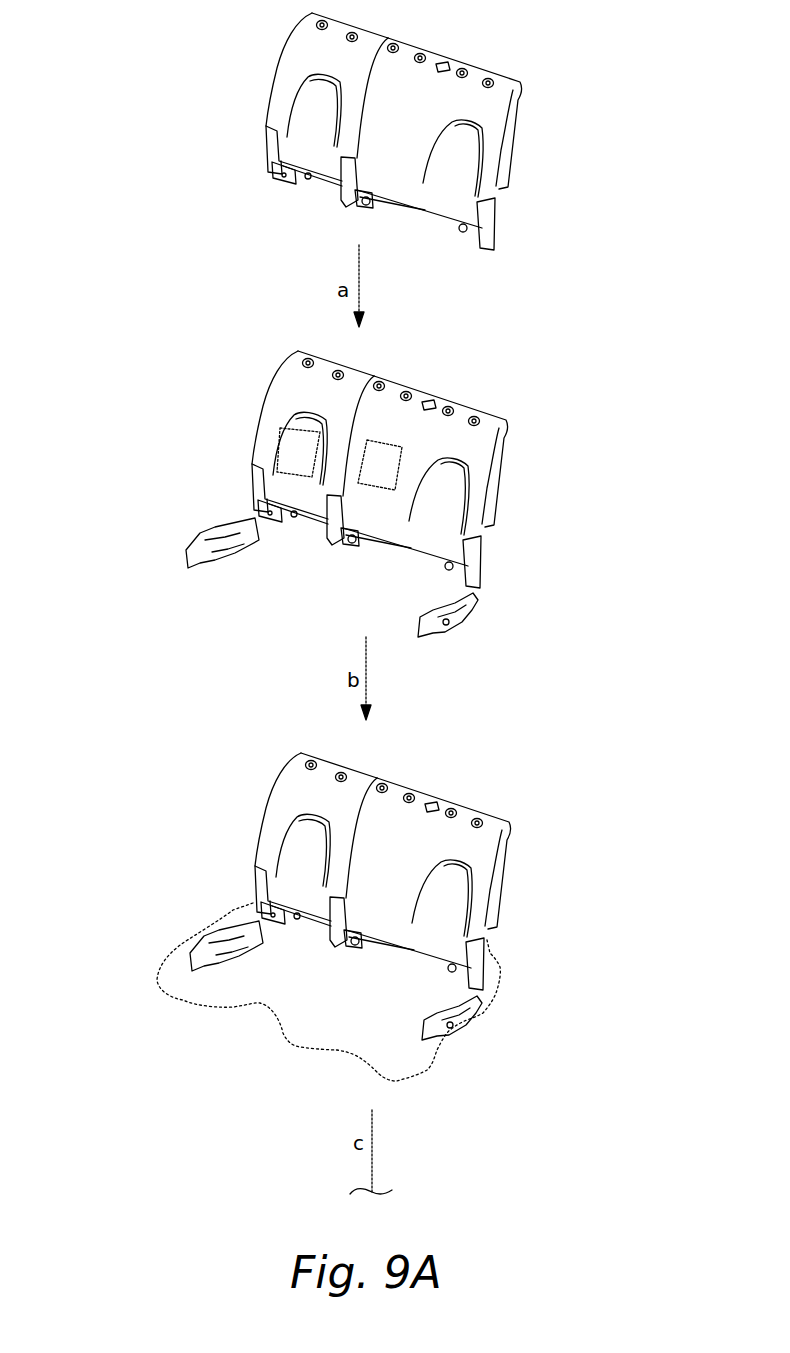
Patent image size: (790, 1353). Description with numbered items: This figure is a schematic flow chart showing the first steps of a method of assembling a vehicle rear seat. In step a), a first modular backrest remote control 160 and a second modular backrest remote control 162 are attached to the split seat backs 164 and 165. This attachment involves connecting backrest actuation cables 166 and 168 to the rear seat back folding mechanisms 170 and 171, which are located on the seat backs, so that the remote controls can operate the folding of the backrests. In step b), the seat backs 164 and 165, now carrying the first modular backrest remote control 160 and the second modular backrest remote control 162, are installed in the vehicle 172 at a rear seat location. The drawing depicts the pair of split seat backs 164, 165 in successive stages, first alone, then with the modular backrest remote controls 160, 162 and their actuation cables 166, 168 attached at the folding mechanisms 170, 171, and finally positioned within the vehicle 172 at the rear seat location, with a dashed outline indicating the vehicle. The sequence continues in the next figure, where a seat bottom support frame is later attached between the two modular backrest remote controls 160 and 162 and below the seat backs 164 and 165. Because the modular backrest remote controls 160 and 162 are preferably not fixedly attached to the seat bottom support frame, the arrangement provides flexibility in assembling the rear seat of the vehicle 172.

The first modular backrest remote control 160 is at (200, 533).
The second modular backrest remote control 162 is at (470, 613).
The split seat back 164 is at (292, 67).
The split seat back 165 is at (475, 108).
The backrest actuation cable 166 is at (253, 517).
The backrest actuation cable 168 is at (478, 588).
The rear seat back folding mechanism 170 is at (293, 458).
The rear seat back folding mechanism 171 is at (382, 462).
The vehicle 172 is at (347, 1003).